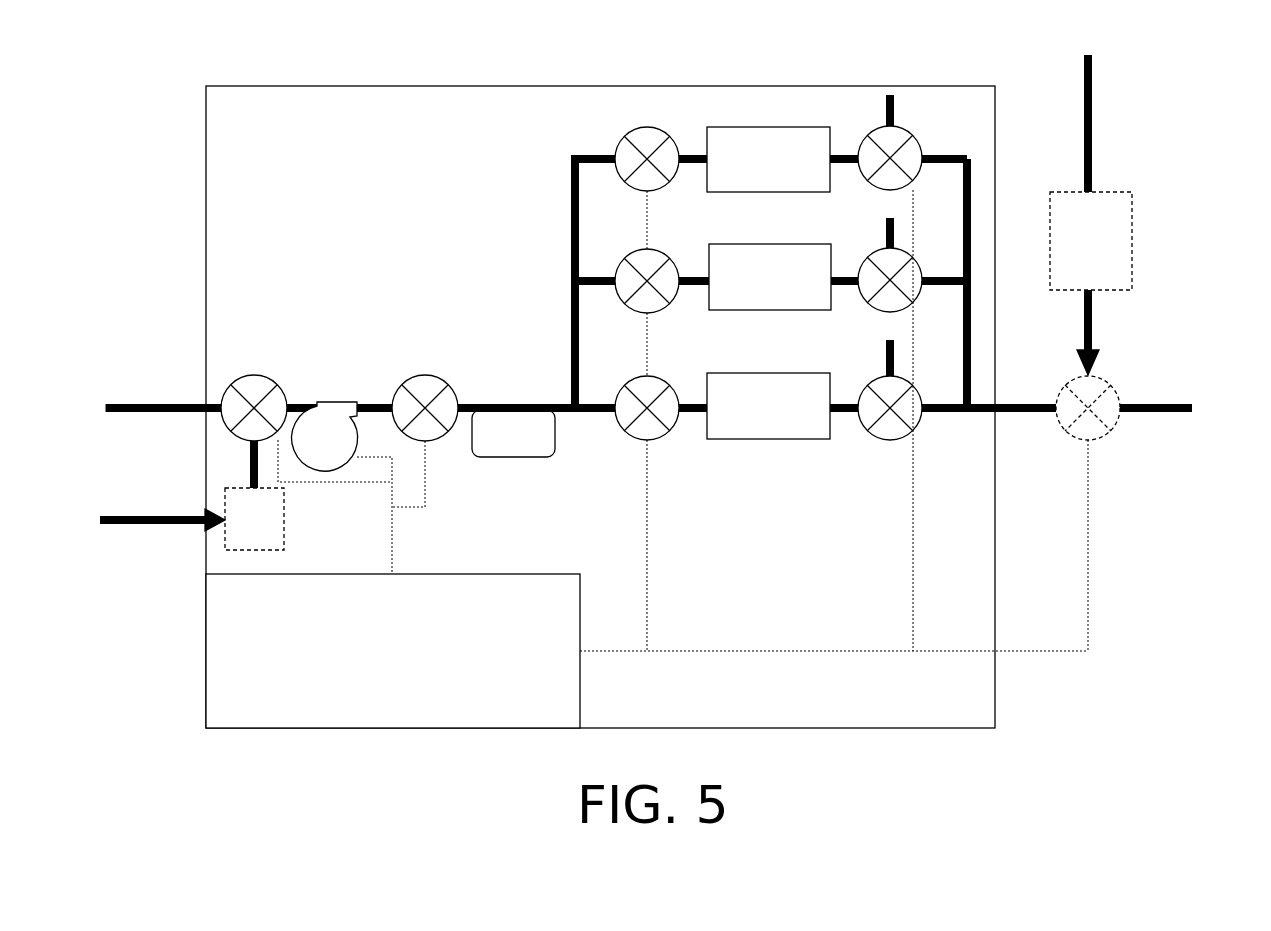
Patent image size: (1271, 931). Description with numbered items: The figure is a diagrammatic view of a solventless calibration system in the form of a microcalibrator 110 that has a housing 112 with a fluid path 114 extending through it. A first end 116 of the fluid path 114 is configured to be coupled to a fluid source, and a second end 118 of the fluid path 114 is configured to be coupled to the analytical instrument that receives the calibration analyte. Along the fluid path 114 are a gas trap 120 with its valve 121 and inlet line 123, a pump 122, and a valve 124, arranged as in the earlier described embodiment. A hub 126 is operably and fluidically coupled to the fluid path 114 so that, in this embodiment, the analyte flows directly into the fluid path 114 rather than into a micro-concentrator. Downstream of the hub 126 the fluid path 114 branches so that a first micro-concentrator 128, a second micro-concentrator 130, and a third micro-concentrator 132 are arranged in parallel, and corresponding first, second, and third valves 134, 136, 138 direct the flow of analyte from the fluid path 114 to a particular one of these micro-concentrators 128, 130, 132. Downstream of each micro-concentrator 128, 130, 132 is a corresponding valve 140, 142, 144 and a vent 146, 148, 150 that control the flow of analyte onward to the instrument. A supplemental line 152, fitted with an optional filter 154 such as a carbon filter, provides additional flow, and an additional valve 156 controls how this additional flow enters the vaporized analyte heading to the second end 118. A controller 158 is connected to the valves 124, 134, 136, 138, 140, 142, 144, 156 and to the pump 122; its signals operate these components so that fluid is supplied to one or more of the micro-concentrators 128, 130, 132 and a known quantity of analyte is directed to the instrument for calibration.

The microcalibrator 110 is at (228, 57).
The housing 112 is at (360, 86).
The fluid path 114 is at (135, 408).
The first end 116 is at (113, 412).
The second end 118 is at (1193, 406).
The gas trap 120 is at (284, 512).
The valve 121 is at (245, 378).
The pump 122 is at (325, 400).
The inlet line 123 is at (140, 524).
The valve 124 is at (400, 382).
The hub 126 is at (505, 457).
The first micro-concentrator 128 is at (760, 127).
The second micro-concentrator 130 is at (760, 244).
The third micro-concentrator 132 is at (757, 373).
The first valve 134 is at (620, 178).
The second valve 136 is at (620, 300).
The third valve 138 is at (614, 416).
The valve 140 is at (865, 177).
The valve 142 is at (865, 302).
The valve 144 is at (862, 420).
The vent 146 is at (886, 116).
The vent 148 is at (886, 238).
The vent 150 is at (886, 363).
The supplemental line 152 is at (1085, 130).
The filter 154 is at (1132, 252).
The additional valve 156 is at (1078, 436).
The controller 158 is at (535, 574).